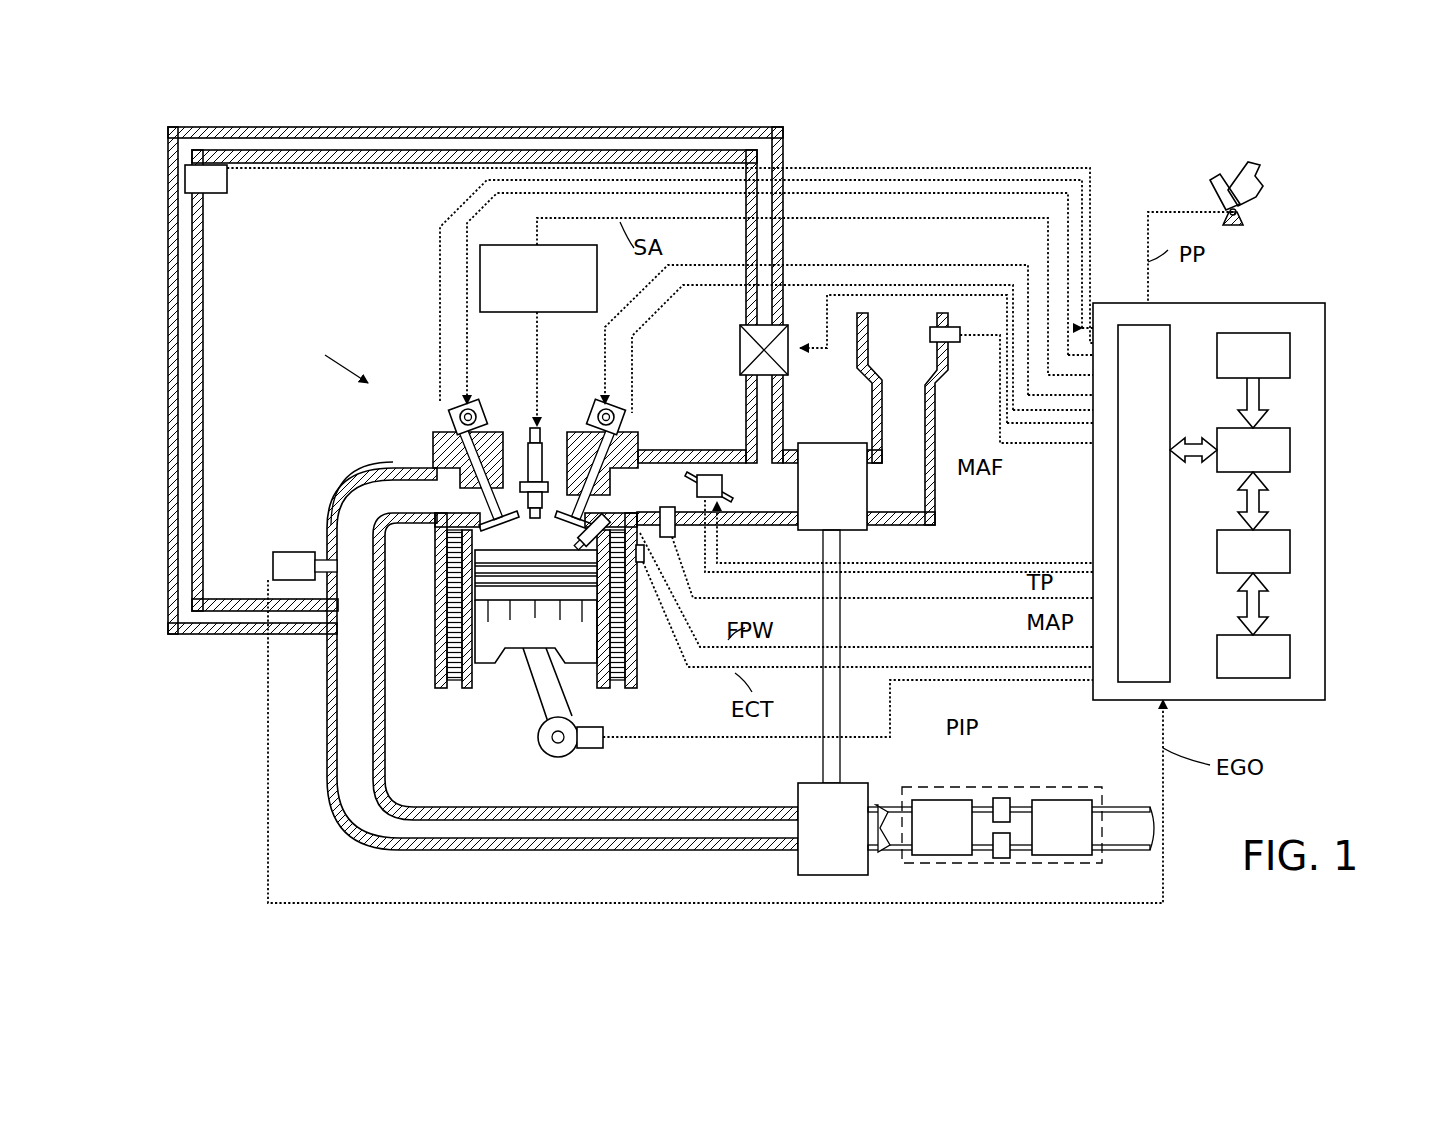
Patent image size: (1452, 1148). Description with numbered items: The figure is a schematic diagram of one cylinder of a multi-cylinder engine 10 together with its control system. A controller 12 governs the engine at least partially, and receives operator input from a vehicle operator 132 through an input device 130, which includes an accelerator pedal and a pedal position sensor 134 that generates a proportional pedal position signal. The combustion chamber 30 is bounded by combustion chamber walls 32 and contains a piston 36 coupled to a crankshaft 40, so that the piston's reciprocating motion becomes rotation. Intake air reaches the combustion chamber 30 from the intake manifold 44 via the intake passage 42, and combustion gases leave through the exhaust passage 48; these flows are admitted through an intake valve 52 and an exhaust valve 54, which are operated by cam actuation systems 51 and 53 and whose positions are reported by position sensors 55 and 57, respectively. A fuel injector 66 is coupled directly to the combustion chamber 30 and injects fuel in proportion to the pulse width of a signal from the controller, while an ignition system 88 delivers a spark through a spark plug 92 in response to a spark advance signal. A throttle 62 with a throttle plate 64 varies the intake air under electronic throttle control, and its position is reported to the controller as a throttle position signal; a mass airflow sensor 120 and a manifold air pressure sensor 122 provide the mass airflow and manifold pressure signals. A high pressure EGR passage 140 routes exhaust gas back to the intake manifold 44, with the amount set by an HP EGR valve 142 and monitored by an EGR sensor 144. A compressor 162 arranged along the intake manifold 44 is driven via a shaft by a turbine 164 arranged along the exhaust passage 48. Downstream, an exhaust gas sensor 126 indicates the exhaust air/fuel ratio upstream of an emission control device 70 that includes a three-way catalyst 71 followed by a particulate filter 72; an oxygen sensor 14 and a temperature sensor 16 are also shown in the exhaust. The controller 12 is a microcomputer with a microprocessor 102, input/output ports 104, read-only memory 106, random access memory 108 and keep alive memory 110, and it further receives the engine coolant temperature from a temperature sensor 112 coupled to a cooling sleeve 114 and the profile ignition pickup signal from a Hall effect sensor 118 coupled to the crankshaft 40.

The engine 10 is at (332, 357).
The controller 12 is at (1254, 486).
The oxygen sensor 14 is at (1003, 798).
The temperature sensor 16 is at (1010, 858).
The combustion chamber 30 is at (532, 620).
The combustion chamber walls 32 is at (472, 680).
The piston 36 is at (520, 635).
The crankshaft 40 is at (548, 755).
The intake passage 42 is at (889, 359).
The intake manifold 44 is at (750, 497).
The exhaust passage 48 is at (390, 507).
The cam actuation system 51 is at (602, 405).
The intake valve 52 is at (545, 505).
The cam actuation system 53 is at (470, 405).
The exhaust valve 54 is at (478, 480).
The position sensor 55 is at (618, 416).
The position sensor 57 is at (452, 410).
The throttle 62 is at (716, 475).
The throttle plate 64 is at (707, 472).
The fuel injector 66 is at (606, 520).
The emission control device 70 is at (1011, 826).
The three-way catalyst 71 is at (929, 839).
The particulate filter 72 is at (1049, 839).
The ignition system 88 is at (517, 245).
The spark plug 92 is at (532, 447).
The microprocessor 102 is at (1290, 445).
The input/output ports 104 is at (1172, 335).
The read-only memory 106 is at (1290, 360).
The random access memory 108 is at (1290, 550).
The keep alive memory 110 is at (1290, 655).
The temperature sensor 112 is at (648, 645).
The cooling sleeve 114 is at (628, 640).
The Hall effect sensor 118 is at (598, 750).
The mass airflow sensor 120 is at (952, 342).
The manifold air pressure sensor 122 is at (675, 537).
The exhaust gas sensor 126 is at (273, 558).
The input device 130 is at (1270, 230).
The vehicle operator 132 is at (1262, 172).
The pedal position sensor 134 is at (1245, 222).
The high pressure EGR passage 140 is at (604, 127).
The HP EGR valve 142 is at (740, 350).
The EGR sensor 144 is at (222, 193).
The compressor 162 is at (812, 443).
The turbine 164 is at (798, 860).